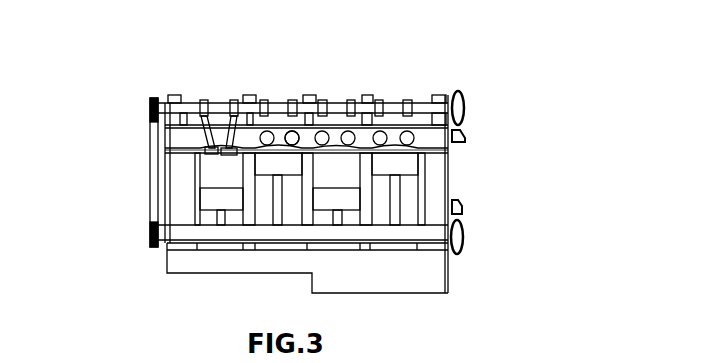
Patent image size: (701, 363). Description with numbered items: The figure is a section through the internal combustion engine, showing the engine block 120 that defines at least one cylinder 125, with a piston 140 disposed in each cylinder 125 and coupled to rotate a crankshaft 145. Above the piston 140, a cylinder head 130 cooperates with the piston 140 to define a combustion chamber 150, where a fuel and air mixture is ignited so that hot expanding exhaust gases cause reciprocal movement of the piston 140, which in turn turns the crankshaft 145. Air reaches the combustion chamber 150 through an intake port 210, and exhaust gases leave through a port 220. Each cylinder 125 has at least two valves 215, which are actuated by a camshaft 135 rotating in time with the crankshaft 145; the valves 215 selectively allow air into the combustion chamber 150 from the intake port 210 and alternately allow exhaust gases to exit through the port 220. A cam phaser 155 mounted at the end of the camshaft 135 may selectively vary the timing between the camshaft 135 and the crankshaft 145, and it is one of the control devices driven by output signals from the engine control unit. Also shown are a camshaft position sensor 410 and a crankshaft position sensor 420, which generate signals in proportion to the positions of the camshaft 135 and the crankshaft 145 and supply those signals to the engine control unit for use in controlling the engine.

The engine block 120 is at (167, 190).
The cylinder 125 is at (342, 150).
The cylinder head 130 is at (207, 150).
The camshaft 135 is at (205, 100).
The piston 140 is at (338, 198).
The crankshaft 145 is at (190, 240).
The combustion chamber 150 is at (408, 155).
The cam phaser 155 is at (147, 105).
The intake port 210 is at (327, 130).
The valve 215 is at (192, 138).
The exhaust port 220 is at (284, 130).
The camshaft position sensor 410 is at (463, 140).
The crankshaft position sensor 420 is at (455, 202).